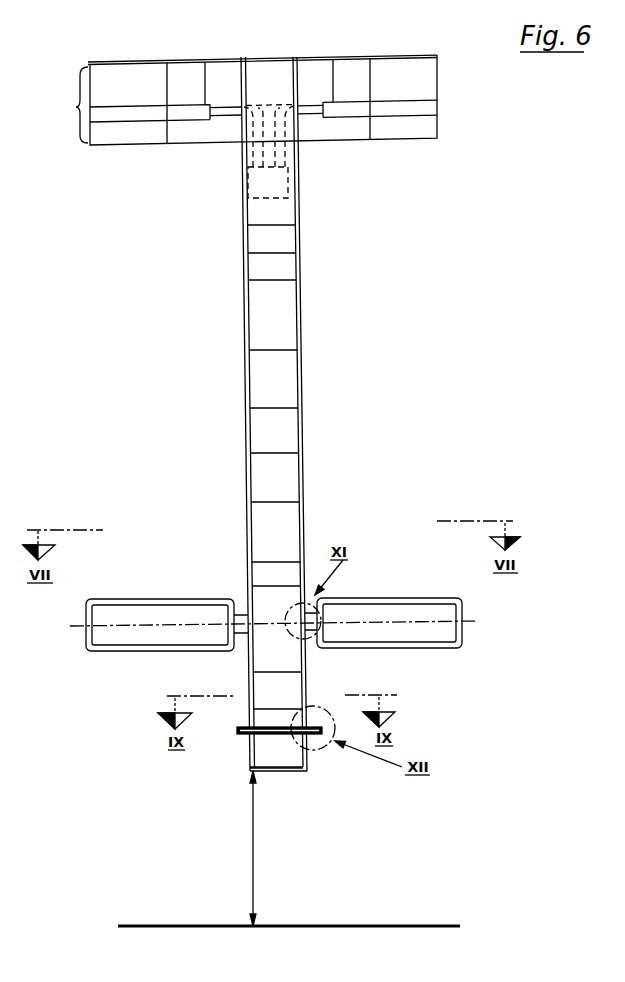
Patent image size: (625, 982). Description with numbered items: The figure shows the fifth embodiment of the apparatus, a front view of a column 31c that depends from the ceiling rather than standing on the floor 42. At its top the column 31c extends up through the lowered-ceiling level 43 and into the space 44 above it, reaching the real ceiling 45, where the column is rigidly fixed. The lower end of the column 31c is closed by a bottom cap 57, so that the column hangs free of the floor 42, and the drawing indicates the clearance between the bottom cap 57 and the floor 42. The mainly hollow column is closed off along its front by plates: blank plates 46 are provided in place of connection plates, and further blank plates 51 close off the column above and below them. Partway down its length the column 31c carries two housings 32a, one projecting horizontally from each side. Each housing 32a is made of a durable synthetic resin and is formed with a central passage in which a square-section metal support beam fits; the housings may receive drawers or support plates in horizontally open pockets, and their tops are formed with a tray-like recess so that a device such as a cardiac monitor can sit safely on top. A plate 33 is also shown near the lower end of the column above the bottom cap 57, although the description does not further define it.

The real ceiling 45 is at (120, 56).
The space 44 is at (69, 105).
The lowered-ceiling level 43 is at (412, 140).
The column 31c is at (300, 302).
The blank plates 51 is at (278, 375).
The blank plates 46 is at (282, 437).
The lower device housings 32a is at (144, 595).
The support plate 33 is at (243, 733).
The bottom cap 57 is at (297, 775).
The floor 42 is at (213, 922).